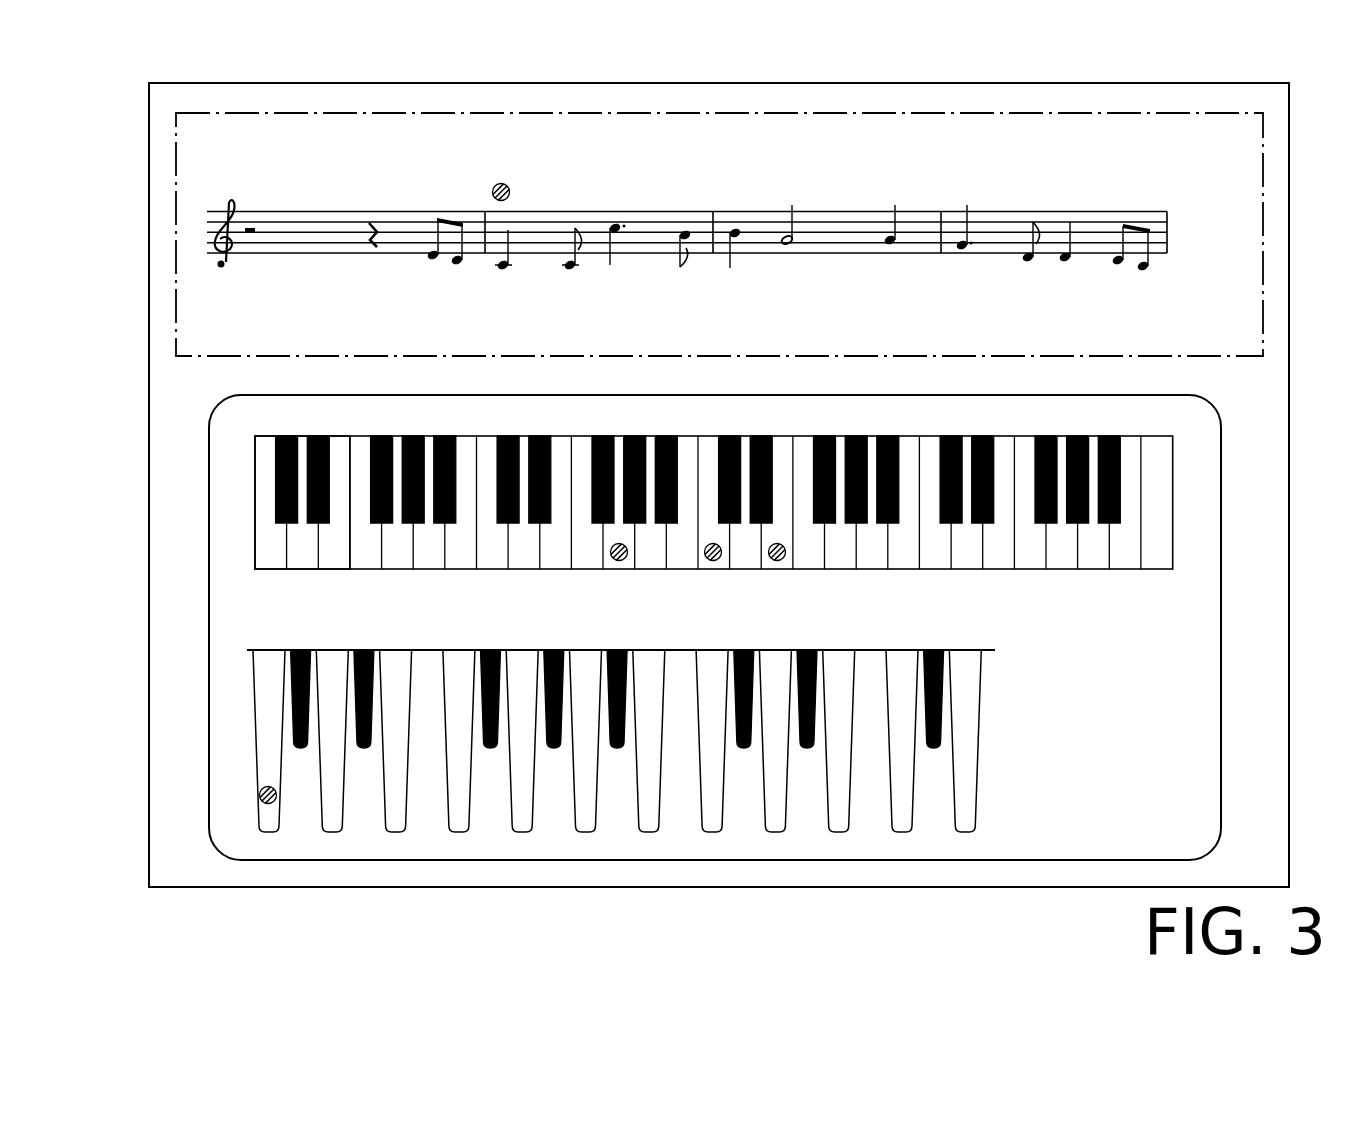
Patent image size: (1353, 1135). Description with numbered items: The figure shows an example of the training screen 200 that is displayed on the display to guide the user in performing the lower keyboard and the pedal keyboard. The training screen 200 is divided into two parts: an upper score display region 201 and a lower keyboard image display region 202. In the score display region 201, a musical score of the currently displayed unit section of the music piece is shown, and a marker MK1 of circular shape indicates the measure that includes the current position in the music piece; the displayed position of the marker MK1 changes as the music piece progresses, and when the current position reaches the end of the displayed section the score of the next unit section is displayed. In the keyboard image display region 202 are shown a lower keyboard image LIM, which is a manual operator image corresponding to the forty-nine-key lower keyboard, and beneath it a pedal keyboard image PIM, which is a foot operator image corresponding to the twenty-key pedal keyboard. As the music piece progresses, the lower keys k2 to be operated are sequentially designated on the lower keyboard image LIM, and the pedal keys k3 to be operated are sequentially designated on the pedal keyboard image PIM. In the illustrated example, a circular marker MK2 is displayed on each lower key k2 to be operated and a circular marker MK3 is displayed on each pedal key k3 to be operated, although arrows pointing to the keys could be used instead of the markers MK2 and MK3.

The training screen 200 is at (1222, 84).
The score display region 201 is at (915, 112).
The keyboard image display region 202 is at (1210, 406).
The marker MK1 is at (513, 190).
The circular marker MK2 is at (760, 590).
The circular marker MK3 is at (259, 797).
The lower keyboard image LIM is at (240, 500).
The pedal keyboard image PIM is at (240, 690).
The lower keys k2 is at (306, 545).
The pedal keys k3 is at (334, 828).